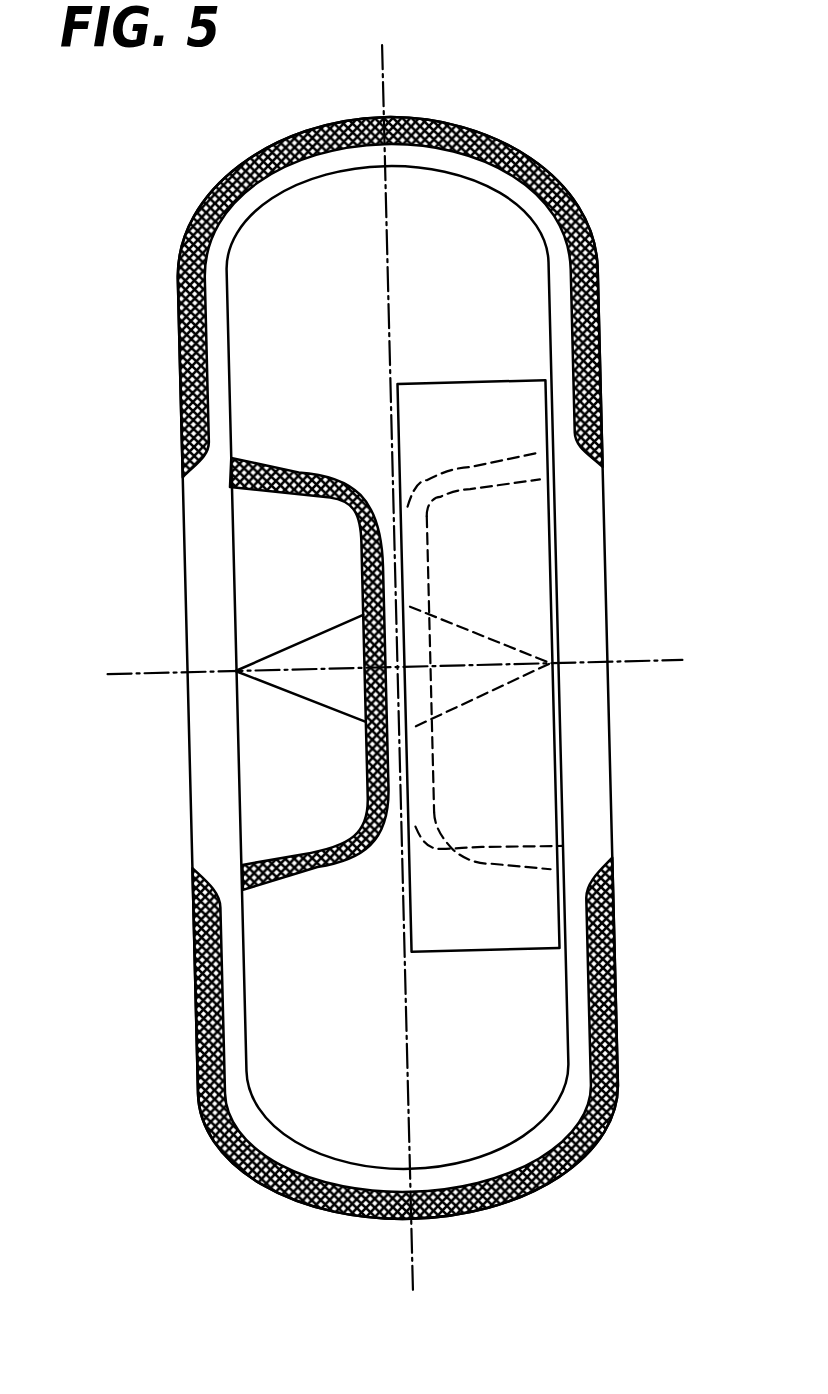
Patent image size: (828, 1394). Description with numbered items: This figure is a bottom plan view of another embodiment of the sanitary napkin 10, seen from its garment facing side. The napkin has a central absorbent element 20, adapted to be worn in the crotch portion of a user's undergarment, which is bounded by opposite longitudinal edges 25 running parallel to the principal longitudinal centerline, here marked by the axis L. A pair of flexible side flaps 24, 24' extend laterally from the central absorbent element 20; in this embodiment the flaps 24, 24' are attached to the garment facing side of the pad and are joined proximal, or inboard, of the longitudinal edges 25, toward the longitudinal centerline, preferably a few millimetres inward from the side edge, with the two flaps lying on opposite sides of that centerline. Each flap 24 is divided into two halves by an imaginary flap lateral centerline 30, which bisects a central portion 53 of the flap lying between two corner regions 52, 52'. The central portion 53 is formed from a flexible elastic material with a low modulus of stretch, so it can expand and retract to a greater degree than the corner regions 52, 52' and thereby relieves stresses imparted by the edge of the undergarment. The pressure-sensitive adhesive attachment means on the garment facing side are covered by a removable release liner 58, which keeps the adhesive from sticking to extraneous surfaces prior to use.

The sanitary napkin 10 is at (592, 145).
The central absorbent element 20 is at (453, 665).
The flexible side flap 24 is at (581, 660).
The flexible side flap 24' is at (220, 674).
The longitudinal edge 25 is at (455, 666).
The flap lateral centerline 30 is at (395, 717).
The corner region 52 is at (552, 492).
The corner region 52' is at (561, 828).
The central portion 53 is at (565, 660).
The release liner 58 is at (557, 663).
The longitudinal axis L is at (439, 654).